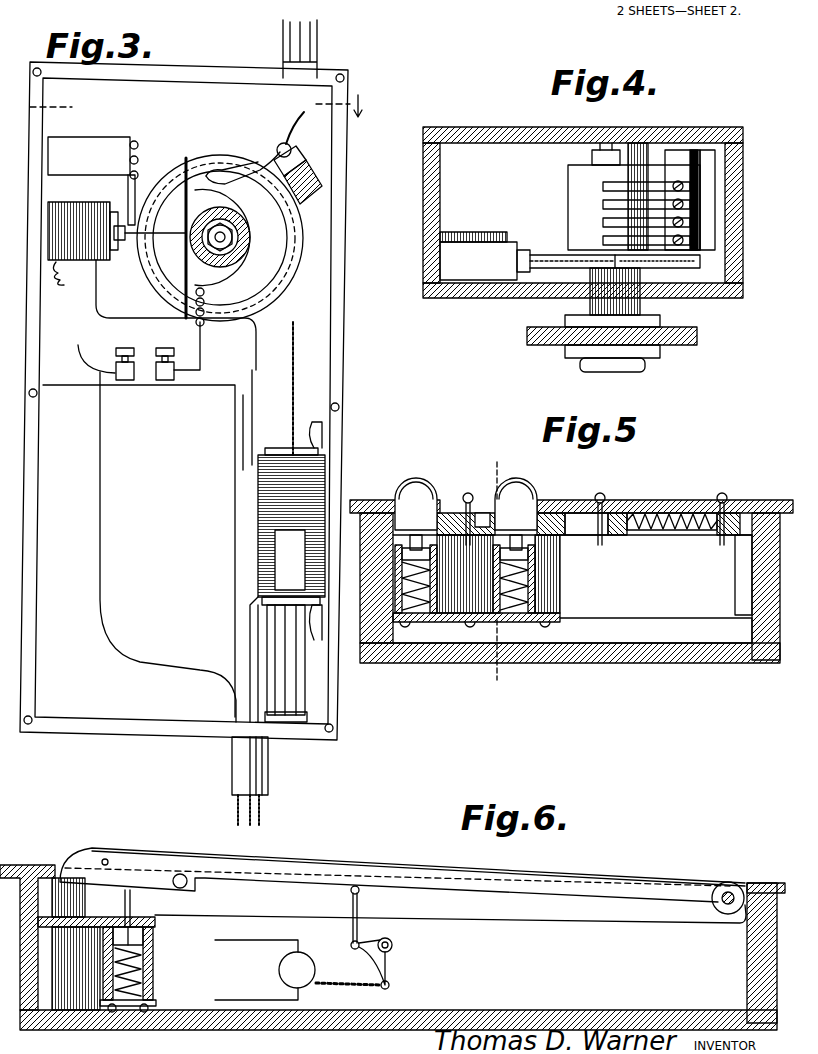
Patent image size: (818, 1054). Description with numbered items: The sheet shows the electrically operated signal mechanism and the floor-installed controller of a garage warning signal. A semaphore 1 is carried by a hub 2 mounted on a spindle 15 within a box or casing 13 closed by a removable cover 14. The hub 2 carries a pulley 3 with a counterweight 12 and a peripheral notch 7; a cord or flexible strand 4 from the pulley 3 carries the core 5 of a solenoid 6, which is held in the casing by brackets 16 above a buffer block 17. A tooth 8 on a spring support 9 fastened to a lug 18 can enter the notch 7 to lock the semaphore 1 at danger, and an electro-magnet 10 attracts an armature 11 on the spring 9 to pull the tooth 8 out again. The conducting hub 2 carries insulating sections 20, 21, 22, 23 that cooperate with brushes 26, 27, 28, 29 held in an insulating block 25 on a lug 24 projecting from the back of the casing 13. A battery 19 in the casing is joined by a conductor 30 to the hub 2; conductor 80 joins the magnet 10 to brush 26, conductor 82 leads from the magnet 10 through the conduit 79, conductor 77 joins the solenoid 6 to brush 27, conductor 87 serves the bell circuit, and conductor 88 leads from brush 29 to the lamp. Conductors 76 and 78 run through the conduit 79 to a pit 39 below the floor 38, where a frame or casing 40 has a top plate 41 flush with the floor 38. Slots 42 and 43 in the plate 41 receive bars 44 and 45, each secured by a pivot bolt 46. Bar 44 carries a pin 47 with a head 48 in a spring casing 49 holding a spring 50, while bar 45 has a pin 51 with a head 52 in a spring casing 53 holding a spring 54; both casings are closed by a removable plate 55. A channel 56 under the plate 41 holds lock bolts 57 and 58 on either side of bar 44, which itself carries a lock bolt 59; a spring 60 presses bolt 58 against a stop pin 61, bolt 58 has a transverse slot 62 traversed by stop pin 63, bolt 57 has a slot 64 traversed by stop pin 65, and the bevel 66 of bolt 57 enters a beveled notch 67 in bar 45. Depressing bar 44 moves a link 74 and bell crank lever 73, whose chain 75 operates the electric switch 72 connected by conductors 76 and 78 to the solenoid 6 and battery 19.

In FIG. 4, the semaphore 1 is at (698, 338).
In FIG. 3, the hub 2 is at (250, 243).
In FIG. 4, the hub 2 is at (568, 175).
In FIG. 3, the pulley 3 is at (268, 302).
In FIG. 4, the pulley 3 is at (565, 268).
In FIG. 3, the cord or flexible strand 4 is at (195, 106).
In FIG. 4, the cord or flexible strand 4 is at (692, 262).
In FIG. 3, the core 5 is at (296, 660).
In FIG. 3, the solenoid 6 is at (258, 528).
In FIG. 5, the solenoid 6 is at (497, 571).
In FIG. 3, the peripheral notch 7 is at (226, 156).
In FIG. 4, the peripheral notch 7 is at (612, 262).
In FIG. 3, the tooth 8 is at (141, 236).
In FIG. 4, the tooth 8 is at (530, 264).
In FIG. 3, the support spring 9 is at (137, 168).
In FIG. 4, the support spring 9 is at (518, 262).
In FIG. 3, the electro-magnet 10 is at (80, 205).
In FIG. 4, the electro-magnet 10 is at (460, 232).
In FIG. 3, the armature 11 is at (120, 242).
In FIG. 3, the counterweight 12 is at (178, 286).
In FIG. 3, the box or casing 13 is at (338, 322).
In FIG. 4, the box or casing 13 is at (500, 128).
In FIG. 3, the removable cover 14 is at (297, 350).
In FIG. 4, the removable cover 14 is at (443, 300).
In FIG. 3, the spindle 15 is at (214, 236).
In FIG. 4, the spindle 15 is at (607, 150).
In FIG. 3, the brackets 16 is at (323, 420).
In FIG. 3, the buffer block 17 is at (310, 716).
In FIG. 3, the lug 18 is at (91, 181).
In FIG. 4, the lug 18 is at (478, 261).
In FIG. 3, the battery 19 is at (139, 551).
In FIG. 4, the insulating strip 20 is at (640, 150).
In FIG. 4, the insulating block or strip 21 is at (605, 195).
In FIG. 4, the insulating strip or block 22 is at (605, 213).
In FIG. 4, the insulating strip or block 23 is at (605, 232).
In FIG. 3, the lug 24 is at (322, 196).
In FIG. 4, the lug 24 is at (705, 160).
In FIG. 3, the insulating block 25 is at (308, 165).
In FIG. 4, the insulating block 25 is at (682, 150).
In FIG. 4, the brush 26 is at (690, 186).
In FIG. 4, the brush 27 is at (690, 204).
In FIG. 4, the brush 28 is at (690, 222).
In FIG. 3, the brush 29 is at (206, 172).
In FIG. 4, the brush 29 is at (690, 240).
In FIG. 3, the conductor 30 is at (204, 365).
In FIG. 5, the floor 38 is at (352, 497).
In FIG. 6, the floor 38 is at (783, 870).
In FIG. 5, the pit 39 is at (572, 630).
In FIG. 6, the pit 39 is at (537, 989).
In FIG. 5, the frame or casing 40 is at (763, 660).
In FIG. 6, the frame or casing 40 is at (752, 980).
In FIG. 5, the top plate 41 is at (775, 506).
In FIG. 6, the top plate 41 is at (32, 866).
In FIG. 5, the elongated slot 42 is at (548, 515).
In FIG. 6, the elongated slot 42 is at (573, 906).
In FIG. 5, the elongated slot 43 is at (396, 506).
In FIG. 5, the bar 44 is at (530, 500).
In FIG. 6, the bar 44 is at (322, 866).
In FIG. 5, the bar 45 is at (420, 478).
In FIG. 6, the pivot bolt 46 is at (729, 890).
In FIG. 5, the pin 47 is at (540, 556).
In FIG. 6, the pin 47 is at (132, 900).
In FIG. 5, the head 48 is at (505, 556).
In FIG. 6, the head 48 is at (144, 940).
In FIG. 5, the spring casing 49 is at (536, 586).
In FIG. 6, the spring casing 49 is at (152, 966).
In FIG. 5, the spring 50 is at (523, 622).
In FIG. 6, the spring 50 is at (152, 985).
In FIG. 5, the pin 51 is at (376, 530).
In FIG. 5, the head 52 is at (380, 560).
In FIG. 5, the spring casing 53 is at (465, 574).
In FIG. 5, the spring 54 is at (418, 640).
In FIG. 5, the removable plate 55 is at (487, 625).
In FIG. 6, the removable plate 55 is at (156, 1003).
In FIG. 5, the channel 56 is at (745, 527).
In FIG. 5, the lock bolt 57 is at (466, 496).
In FIG. 5, the lock bolt 58 is at (576, 514).
In FIG. 5, the lock bolt 59 is at (518, 480).
In FIG. 6, the lock bolt 59 is at (183, 874).
In FIG. 5, the spring 60 is at (673, 532).
In FIG. 5, the stop pin 61 is at (722, 495).
In FIG. 5, the transverse slot 62 is at (583, 527).
In FIG. 5, the stop pin 63 is at (604, 497).
In FIG. 5, the transverse slot 64 is at (482, 512).
In FIG. 5, the stop pin 65 is at (466, 548).
In FIG. 5, the bevel 66 is at (445, 513).
In FIG. 5, the beveled notch 67 is at (412, 482).
In FIG. 6, the electric switch 72 is at (280, 970).
In FIG. 6, the bell crank lever 73 is at (395, 958).
In FIG. 6, the link 74 is at (351, 927).
In FIG. 6, the chain 75 is at (354, 988).
In FIG. 3, the conductor 76 is at (248, 636).
In FIG. 6, the conductor 76 is at (256, 959).
In FIG. 3, the conductor 77 is at (240, 436).
In FIG. 3, the conductor 78 is at (103, 497).
In FIG. 6, the conductor 78 is at (262, 1002).
In FIG. 3, the conduit 79 is at (256, 766).
In FIG. 3, the conductor 80 is at (70, 274).
In FIG. 3, the conductor 82 is at (93, 313).
In FIG. 3, the conductor 87 is at (78, 350).
In FIG. 3, the conductor 88 is at (288, 122).